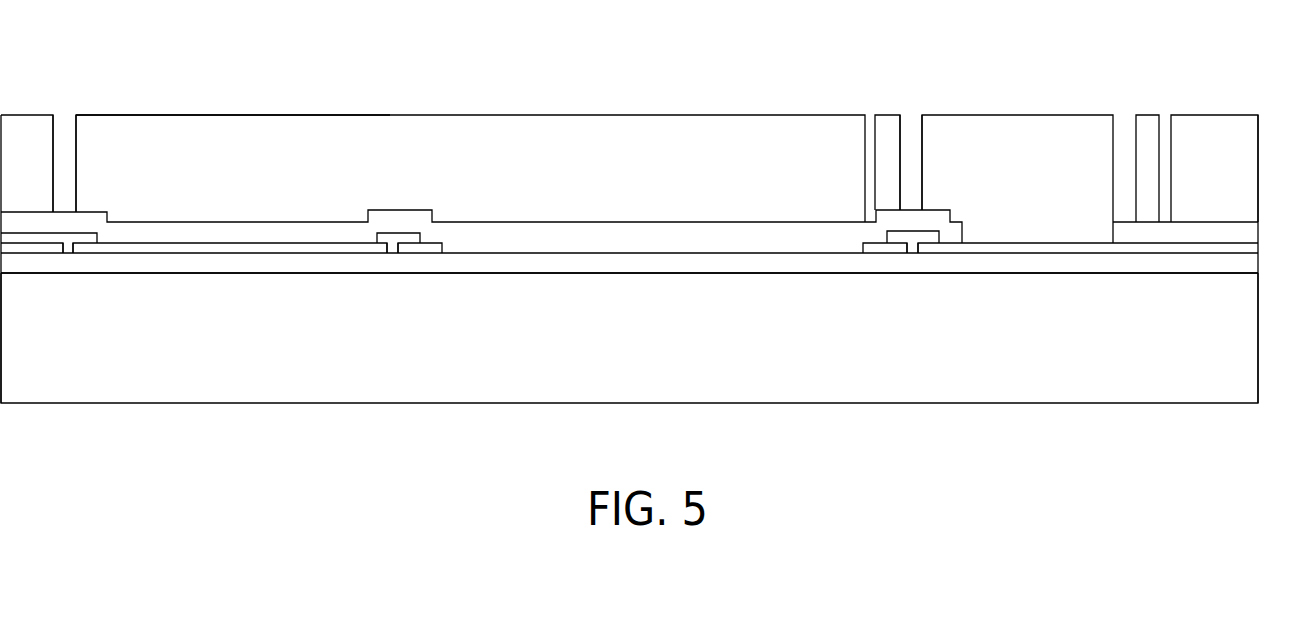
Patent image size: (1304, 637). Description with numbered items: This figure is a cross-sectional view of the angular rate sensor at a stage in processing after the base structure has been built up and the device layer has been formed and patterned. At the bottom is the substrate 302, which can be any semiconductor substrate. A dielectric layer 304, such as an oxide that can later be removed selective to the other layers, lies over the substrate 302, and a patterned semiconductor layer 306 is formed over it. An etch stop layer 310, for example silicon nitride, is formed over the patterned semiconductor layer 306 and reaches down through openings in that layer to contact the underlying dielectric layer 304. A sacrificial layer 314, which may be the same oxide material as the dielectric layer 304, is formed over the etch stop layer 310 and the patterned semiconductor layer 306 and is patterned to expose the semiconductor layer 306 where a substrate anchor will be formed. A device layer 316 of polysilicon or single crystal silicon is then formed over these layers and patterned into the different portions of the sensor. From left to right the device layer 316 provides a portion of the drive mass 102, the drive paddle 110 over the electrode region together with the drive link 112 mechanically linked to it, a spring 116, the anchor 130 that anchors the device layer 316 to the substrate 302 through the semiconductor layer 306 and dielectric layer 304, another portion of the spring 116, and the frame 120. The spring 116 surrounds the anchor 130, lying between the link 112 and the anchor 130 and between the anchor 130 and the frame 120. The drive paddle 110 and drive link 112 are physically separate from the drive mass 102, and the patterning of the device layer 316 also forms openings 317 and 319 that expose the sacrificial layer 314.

The drive mass 102 is at (42, 180).
The drive paddle 110 is at (390, 95).
The drive link 112 is at (865, 95).
The spring 116 is at (890, 128).
The frame 120 is at (1215, 128).
The anchor 130 is at (1031, 96).
The substrate 302 is at (652, 365).
The dielectric layer 304 is at (1167, 265).
The patterned semiconductor layer 306 is at (24, 248).
The etch stop layer 310 is at (68, 240).
The sacrificial layer 314 is at (88, 218).
The device layer 316 is at (1268, 146).
The opening 317 is at (62, 110).
The opening 319 is at (915, 113).